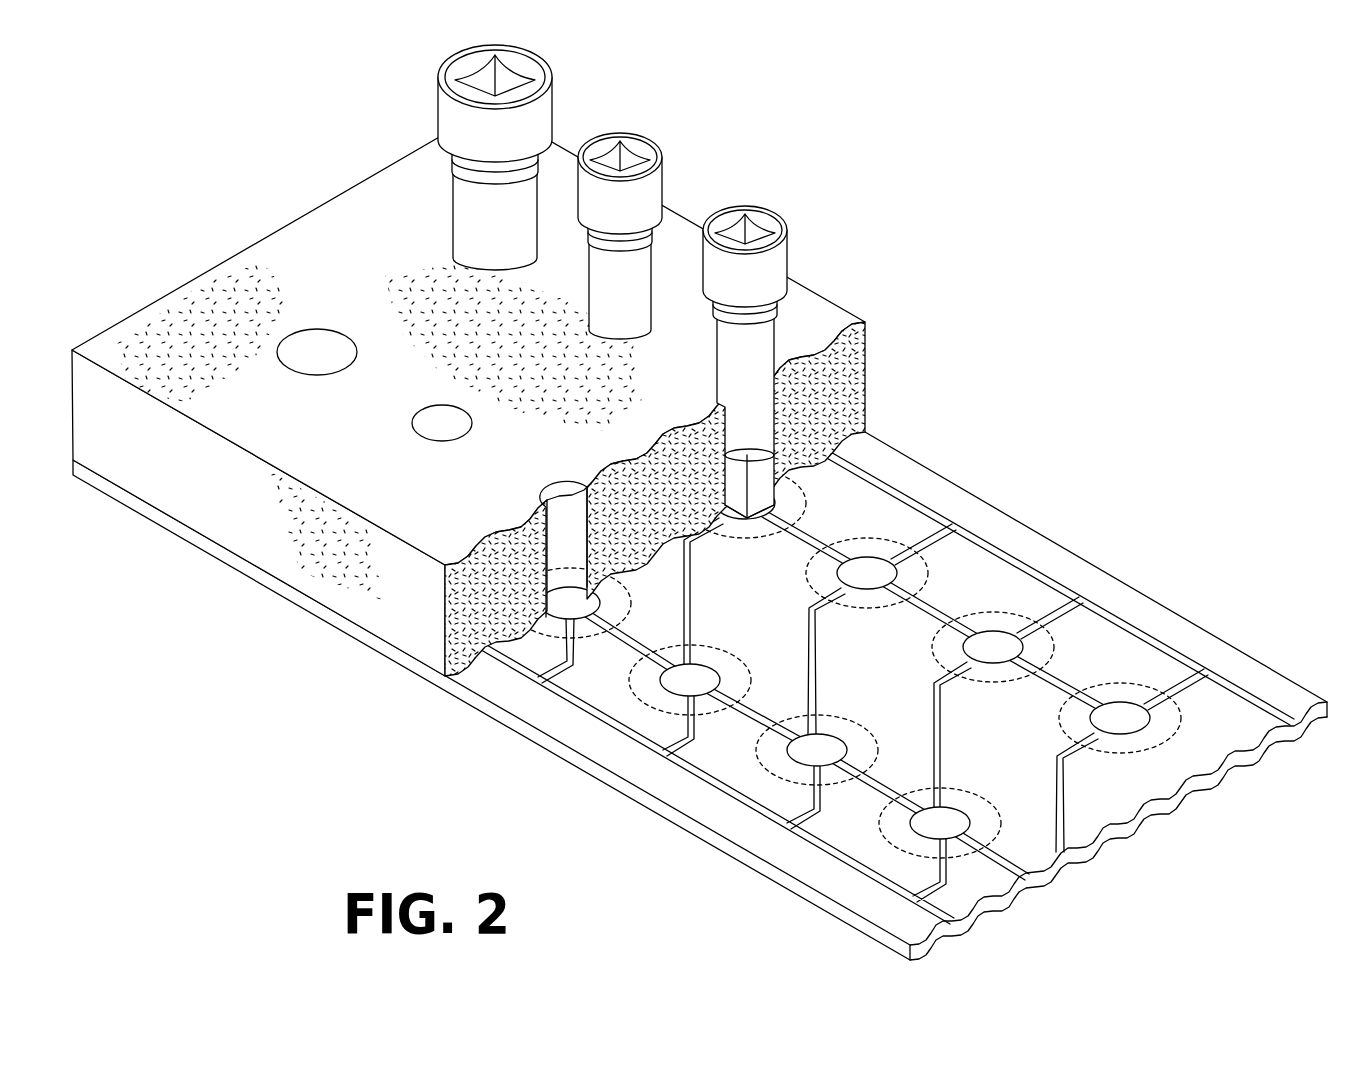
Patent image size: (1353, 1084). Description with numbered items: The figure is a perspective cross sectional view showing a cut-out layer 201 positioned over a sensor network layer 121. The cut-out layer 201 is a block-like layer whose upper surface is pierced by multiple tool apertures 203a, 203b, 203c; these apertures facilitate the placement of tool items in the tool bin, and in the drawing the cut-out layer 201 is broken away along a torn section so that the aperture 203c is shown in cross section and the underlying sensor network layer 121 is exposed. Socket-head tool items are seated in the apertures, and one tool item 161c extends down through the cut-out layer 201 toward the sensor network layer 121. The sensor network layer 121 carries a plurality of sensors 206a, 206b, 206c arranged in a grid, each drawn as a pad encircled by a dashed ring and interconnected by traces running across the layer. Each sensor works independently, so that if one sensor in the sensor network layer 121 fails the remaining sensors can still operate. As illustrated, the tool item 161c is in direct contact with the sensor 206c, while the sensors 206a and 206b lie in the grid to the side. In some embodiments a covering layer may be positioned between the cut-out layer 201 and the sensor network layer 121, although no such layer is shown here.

The sensor network layer 121 is at (945, 500).
The cut-out layer 201 is at (843, 318).
The tool aperture 203a is at (304, 362).
The tool aperture 203b is at (430, 432).
The tool aperture 203c is at (550, 492).
The tool item 161c is at (783, 256).
The sensor 206a is at (1000, 643).
The sensor 206b is at (1105, 717).
The sensor 206c is at (767, 512).